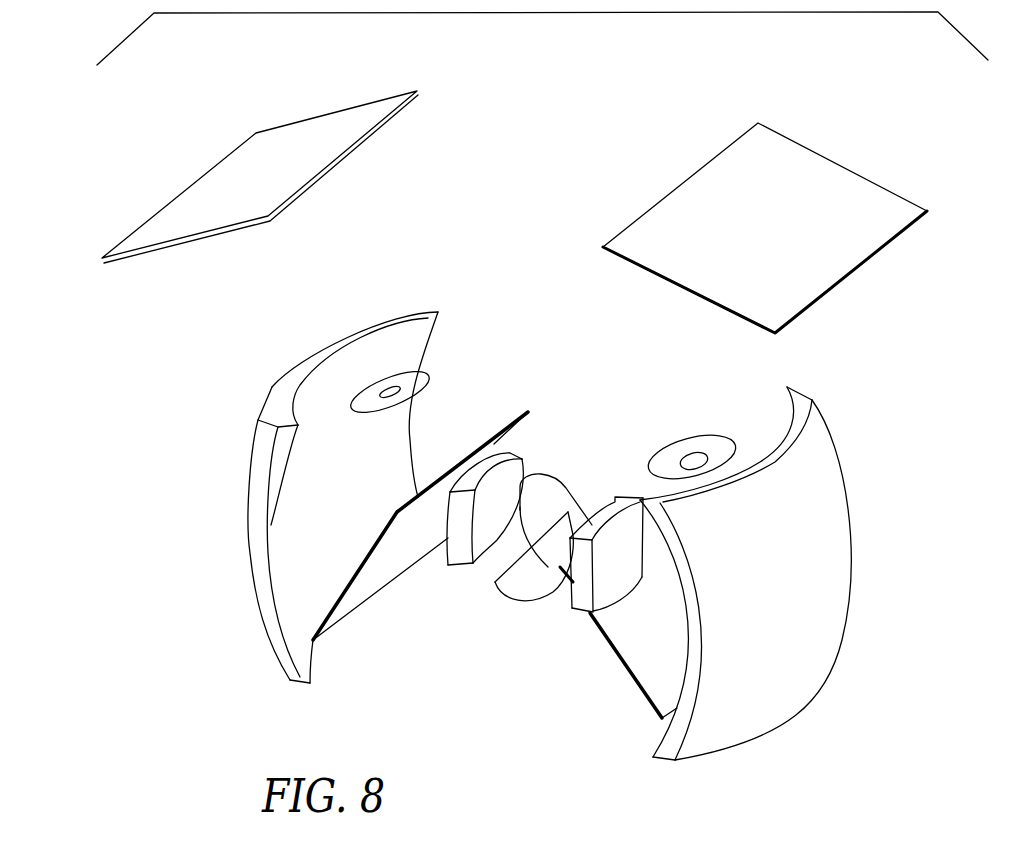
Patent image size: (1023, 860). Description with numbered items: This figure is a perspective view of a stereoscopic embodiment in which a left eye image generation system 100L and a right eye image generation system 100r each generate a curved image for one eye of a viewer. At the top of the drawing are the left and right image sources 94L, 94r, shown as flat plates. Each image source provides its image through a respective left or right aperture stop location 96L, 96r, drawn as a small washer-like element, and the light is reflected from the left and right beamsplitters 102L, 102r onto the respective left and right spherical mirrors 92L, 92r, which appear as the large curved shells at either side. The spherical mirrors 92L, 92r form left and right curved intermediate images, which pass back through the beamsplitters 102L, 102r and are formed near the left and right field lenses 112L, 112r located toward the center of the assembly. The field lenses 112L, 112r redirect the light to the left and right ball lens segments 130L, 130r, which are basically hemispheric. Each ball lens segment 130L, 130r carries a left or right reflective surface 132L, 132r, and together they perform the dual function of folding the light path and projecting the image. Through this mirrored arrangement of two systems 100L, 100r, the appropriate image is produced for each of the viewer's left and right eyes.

The left image source 94L is at (172, 200).
The right image source 94r is at (835, 163).
The left spherical mirror 92L is at (270, 387).
The right spherical mirror 92r is at (840, 530).
The left aperture stop location 96L is at (427, 381).
The right aperture stop location 96r is at (697, 443).
The left eye image generation system 100L is at (200, 500).
The right eye image generation system 100r is at (876, 627).
The left beamsplitter 102L is at (302, 590).
The right beamsplitter 102r is at (632, 672).
The left field lens 112L is at (430, 577).
The right field lens 112r is at (570, 607).
The left ball lens segment 130L is at (562, 492).
The right ball lens segment 130r is at (503, 596).
The left reflective surface 132L is at (542, 484).
The right reflective surface 132r is at (490, 556).